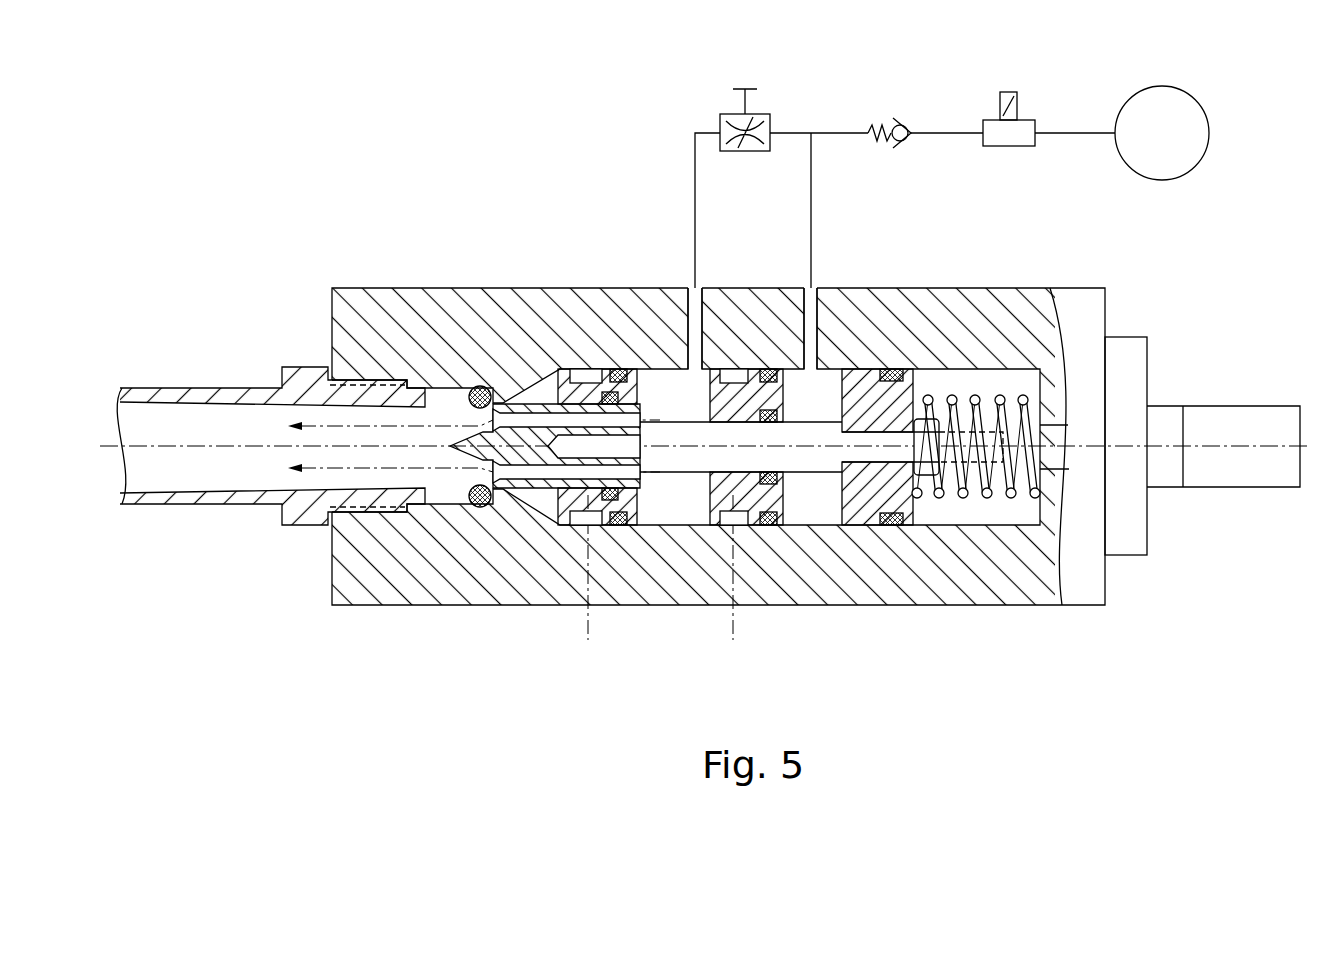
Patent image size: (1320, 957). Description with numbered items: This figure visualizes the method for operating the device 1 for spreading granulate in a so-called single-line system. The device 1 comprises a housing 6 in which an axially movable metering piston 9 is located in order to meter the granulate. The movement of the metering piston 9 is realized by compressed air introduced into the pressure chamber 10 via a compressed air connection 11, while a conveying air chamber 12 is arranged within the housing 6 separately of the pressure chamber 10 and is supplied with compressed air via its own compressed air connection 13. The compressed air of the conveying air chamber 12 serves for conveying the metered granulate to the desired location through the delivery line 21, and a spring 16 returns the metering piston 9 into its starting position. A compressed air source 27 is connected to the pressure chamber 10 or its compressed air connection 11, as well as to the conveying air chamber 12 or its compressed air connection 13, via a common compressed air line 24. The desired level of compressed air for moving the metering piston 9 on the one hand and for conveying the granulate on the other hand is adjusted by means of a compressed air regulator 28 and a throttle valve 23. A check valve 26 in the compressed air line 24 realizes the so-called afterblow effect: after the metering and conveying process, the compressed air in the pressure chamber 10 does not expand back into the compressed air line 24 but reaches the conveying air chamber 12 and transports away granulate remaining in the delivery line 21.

The device 1 is at (305, 665).
The housing 6 is at (925, 565).
The metering piston 9 is at (533, 483).
The pressure chamber 10 is at (810, 497).
The compressed air connection 11 is at (813, 288).
The conveying air chamber 12 is at (688, 497).
The compressed air connection 13 is at (690, 288).
The spring 16 is at (1023, 398).
The delivery line 21 is at (192, 498).
The throttle valve 23 is at (733, 115).
The compressed air line 24 is at (839, 133).
The check valve 26 is at (901, 120).
The compressed air source 27 is at (1210, 137).
The compressed air regulator 28 is at (1022, 120).